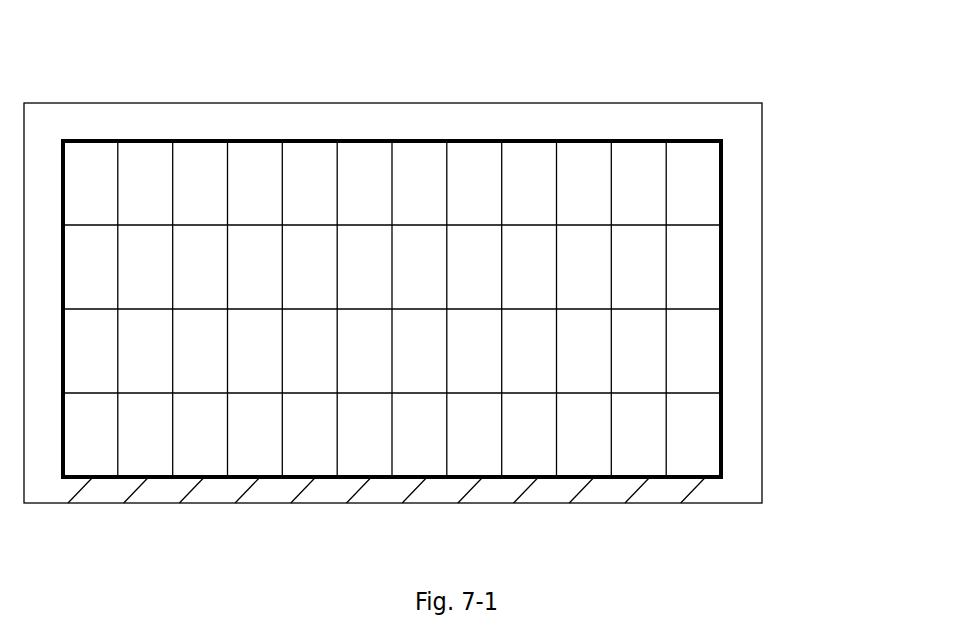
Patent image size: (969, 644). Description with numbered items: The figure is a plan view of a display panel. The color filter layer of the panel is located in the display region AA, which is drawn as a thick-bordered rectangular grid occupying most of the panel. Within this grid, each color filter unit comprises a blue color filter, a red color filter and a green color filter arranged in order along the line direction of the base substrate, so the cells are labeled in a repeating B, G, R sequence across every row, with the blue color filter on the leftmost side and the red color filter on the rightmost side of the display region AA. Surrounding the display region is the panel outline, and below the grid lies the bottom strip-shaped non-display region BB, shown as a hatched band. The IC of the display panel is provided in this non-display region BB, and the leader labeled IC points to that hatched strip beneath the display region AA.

The display region AA is at (392, 243).
The bottom strip-shaped non-display region BB is at (449, 267).
The element IC is at (387, 516).